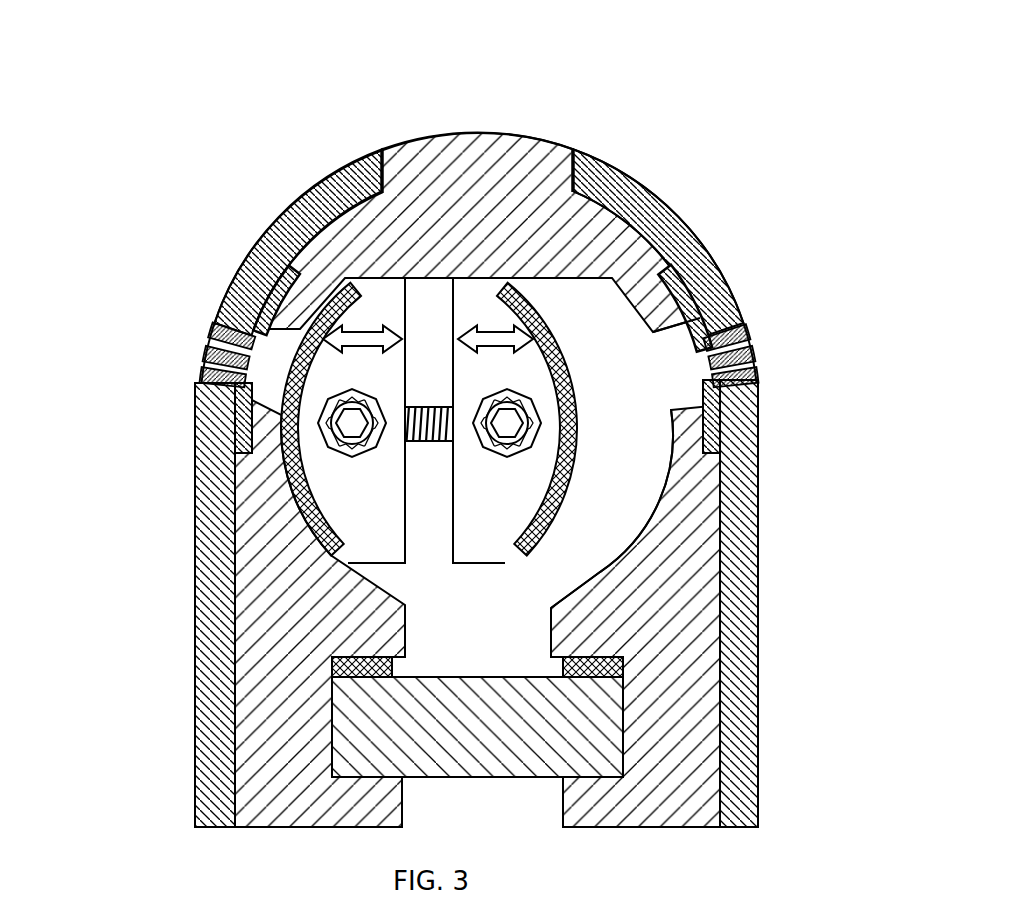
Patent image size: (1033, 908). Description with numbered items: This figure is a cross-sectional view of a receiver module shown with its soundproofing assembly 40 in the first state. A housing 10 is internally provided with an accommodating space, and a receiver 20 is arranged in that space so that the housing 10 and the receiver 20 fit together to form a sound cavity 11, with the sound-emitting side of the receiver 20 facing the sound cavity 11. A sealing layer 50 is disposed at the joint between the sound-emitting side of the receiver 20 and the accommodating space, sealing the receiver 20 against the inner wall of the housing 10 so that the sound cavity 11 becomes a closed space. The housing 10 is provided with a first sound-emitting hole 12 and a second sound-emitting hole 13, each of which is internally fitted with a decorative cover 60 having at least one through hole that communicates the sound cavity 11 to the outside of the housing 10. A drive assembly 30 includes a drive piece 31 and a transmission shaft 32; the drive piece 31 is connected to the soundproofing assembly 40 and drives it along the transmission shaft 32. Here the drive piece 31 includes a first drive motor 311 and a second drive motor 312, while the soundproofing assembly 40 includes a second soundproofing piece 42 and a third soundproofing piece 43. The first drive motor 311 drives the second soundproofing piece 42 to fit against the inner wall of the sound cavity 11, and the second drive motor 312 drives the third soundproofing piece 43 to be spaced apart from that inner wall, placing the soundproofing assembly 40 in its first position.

The housing 10 is at (533, 160).
The sound cavity 11 is at (625, 488).
The first sound-emitting hole 12 is at (270, 340).
The second sound-emitting hole 13 is at (675, 372).
The receiver 20 is at (580, 737).
The drive assembly 30 is at (68, 398).
The drive piece 31 is at (135, 498).
The first drive motor 311 is at (350, 415).
The second drive motor 312 is at (517, 425).
The transmission shaft 32 is at (412, 405).
The soundproofing assembly 40 is at (133, 17).
The second soundproofing piece 42 is at (380, 323).
The third soundproofing piece 43 is at (497, 307).
The sealing layer 50 is at (600, 672).
The decorative cover 60 is at (672, 412).